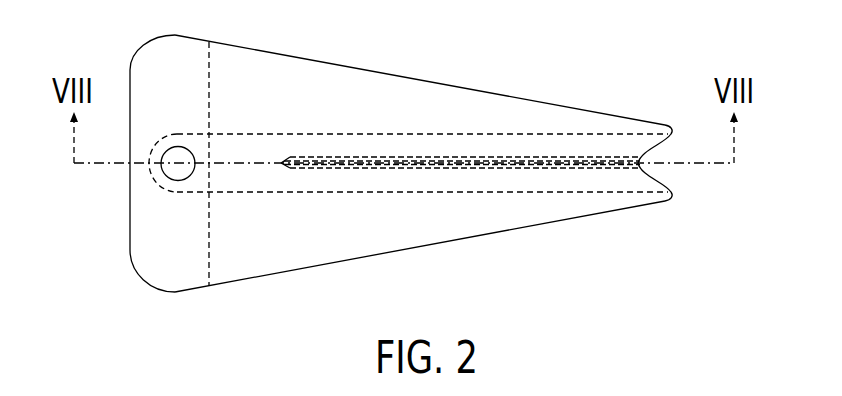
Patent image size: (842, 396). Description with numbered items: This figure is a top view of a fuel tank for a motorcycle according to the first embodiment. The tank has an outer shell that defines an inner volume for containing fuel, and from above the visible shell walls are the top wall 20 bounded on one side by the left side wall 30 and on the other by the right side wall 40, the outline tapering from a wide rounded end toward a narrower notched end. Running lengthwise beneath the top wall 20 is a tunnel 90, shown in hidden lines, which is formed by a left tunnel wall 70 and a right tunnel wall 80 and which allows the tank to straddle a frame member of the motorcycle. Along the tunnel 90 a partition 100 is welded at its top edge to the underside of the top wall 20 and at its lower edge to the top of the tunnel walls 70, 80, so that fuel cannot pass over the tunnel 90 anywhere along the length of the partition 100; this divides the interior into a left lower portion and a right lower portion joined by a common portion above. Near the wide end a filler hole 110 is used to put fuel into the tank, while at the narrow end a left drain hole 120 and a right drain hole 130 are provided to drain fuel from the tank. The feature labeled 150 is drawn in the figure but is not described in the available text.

The top wall 20 is at (316, 104).
The left side wall 30 is at (452, 241).
The right side wall 40 is at (457, 85).
The left tunnel wall 70 is at (376, 189).
The right tunnel wall 80 is at (378, 136).
The tunnel 90 is at (555, 155).
The partition 100 is at (307, 187).
The filler hole 110 is at (153, 171).
The left drain hole 120 is at (612, 192).
The right drain hole 130 is at (612, 132).
The channel inlet 150 is at (277, 163).